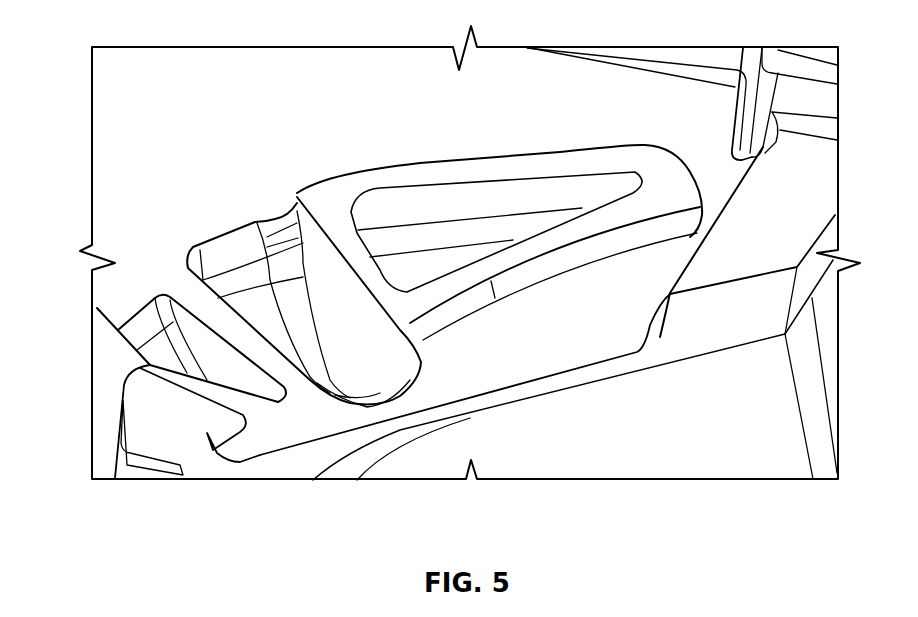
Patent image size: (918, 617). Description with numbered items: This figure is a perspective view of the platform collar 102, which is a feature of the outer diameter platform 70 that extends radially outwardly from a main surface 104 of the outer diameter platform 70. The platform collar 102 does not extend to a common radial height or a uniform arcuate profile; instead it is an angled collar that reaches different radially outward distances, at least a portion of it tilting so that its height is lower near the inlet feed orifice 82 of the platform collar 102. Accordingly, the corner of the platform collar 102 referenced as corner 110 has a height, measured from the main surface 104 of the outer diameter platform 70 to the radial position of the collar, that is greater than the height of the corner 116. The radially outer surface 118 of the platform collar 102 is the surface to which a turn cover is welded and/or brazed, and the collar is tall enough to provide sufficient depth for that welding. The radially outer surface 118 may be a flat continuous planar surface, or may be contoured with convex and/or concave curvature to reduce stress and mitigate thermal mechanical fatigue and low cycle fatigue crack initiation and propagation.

The outer diameter platform 70 is at (111, 90).
The main surface 104 is at (235, 90).
The corner of the platform collar 110 is at (300, 200).
The radially outer surface 118 is at (596, 168).
The platform collar 102 is at (686, 181).
The corner 116 is at (430, 332).
The inlet feed orifice 82 is at (385, 386).